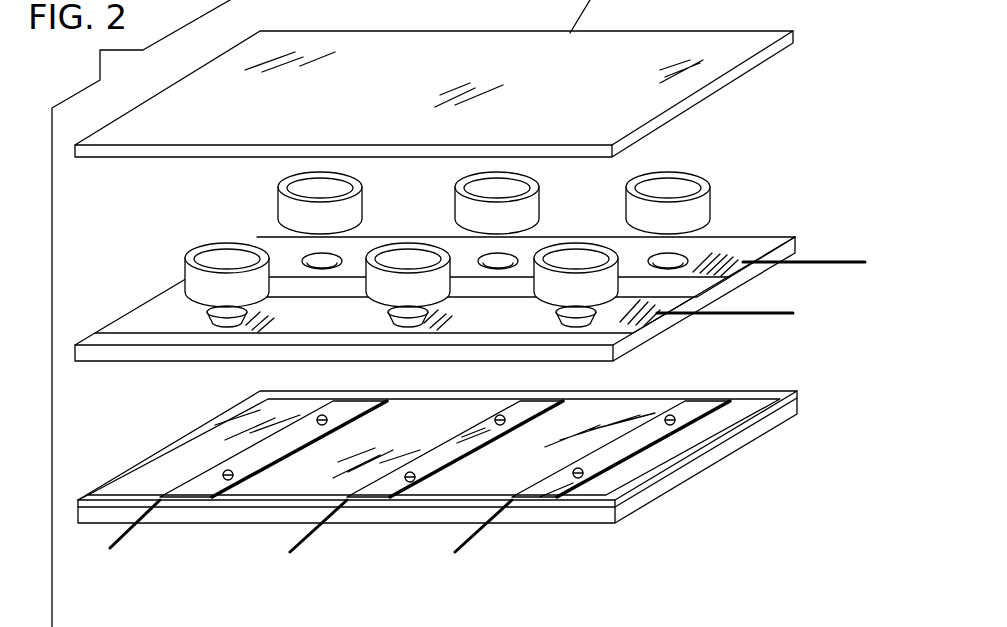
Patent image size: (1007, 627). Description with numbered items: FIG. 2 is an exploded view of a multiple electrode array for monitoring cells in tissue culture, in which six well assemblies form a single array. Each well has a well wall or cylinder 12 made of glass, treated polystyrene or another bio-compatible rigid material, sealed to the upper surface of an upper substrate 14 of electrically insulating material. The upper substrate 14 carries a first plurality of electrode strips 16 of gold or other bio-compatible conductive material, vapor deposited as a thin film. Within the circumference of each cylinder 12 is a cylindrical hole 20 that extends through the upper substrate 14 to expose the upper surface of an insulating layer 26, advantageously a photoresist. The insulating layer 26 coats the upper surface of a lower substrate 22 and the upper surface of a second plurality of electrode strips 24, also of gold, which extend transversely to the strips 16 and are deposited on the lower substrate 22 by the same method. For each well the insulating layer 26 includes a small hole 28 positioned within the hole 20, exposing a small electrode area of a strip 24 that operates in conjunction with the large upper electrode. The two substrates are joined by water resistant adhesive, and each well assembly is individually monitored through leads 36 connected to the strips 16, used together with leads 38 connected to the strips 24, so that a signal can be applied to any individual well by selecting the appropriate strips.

The well wall or cylinder 12 is at (204, 262).
The upper substrate 14 is at (775, 237).
The electrode strips 16 is at (718, 253).
The cylindrical hole 20 is at (313, 256).
The lower substrate 22 is at (766, 432).
The electrode strips 24 is at (515, 401).
The insulating layer 26 is at (757, 397).
The small hole 28 is at (670, 413).
The leads 36 is at (808, 263).
The leads 38 is at (460, 540).